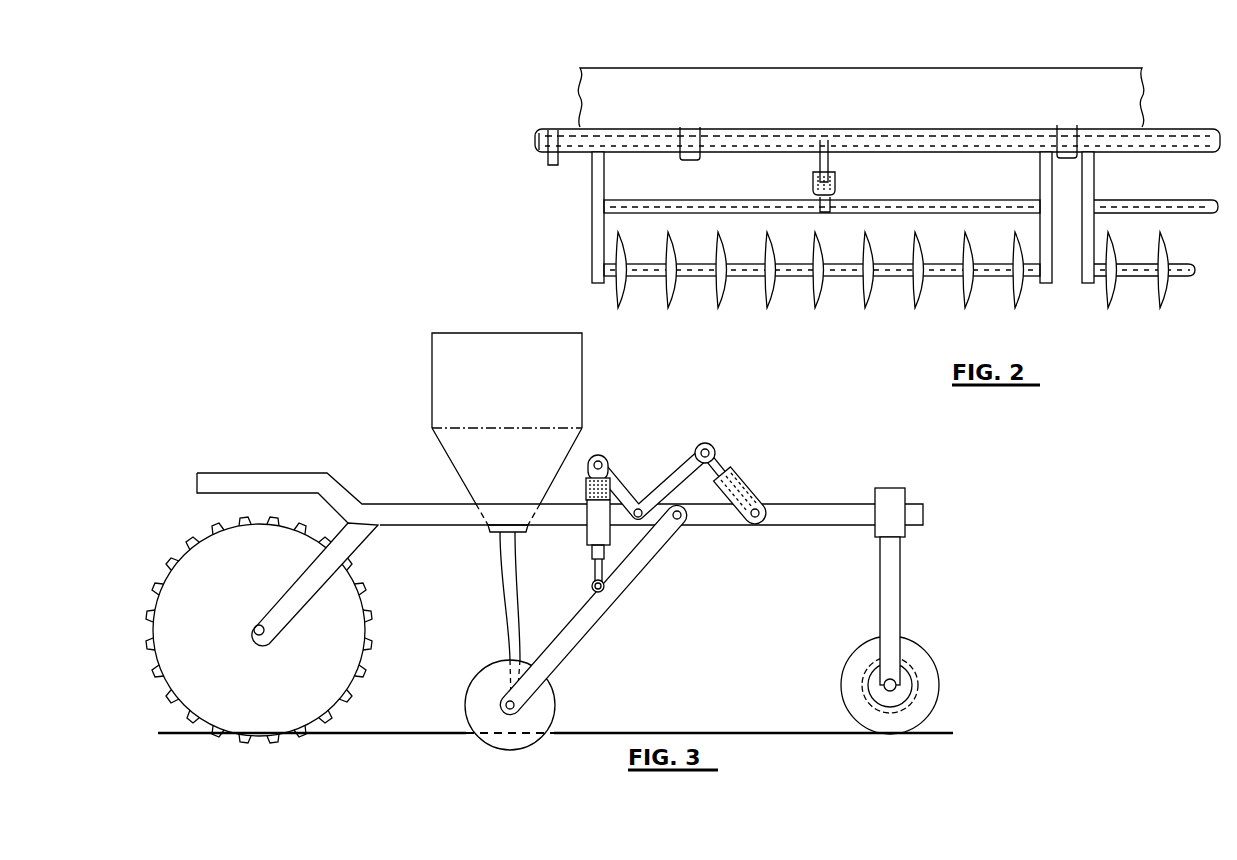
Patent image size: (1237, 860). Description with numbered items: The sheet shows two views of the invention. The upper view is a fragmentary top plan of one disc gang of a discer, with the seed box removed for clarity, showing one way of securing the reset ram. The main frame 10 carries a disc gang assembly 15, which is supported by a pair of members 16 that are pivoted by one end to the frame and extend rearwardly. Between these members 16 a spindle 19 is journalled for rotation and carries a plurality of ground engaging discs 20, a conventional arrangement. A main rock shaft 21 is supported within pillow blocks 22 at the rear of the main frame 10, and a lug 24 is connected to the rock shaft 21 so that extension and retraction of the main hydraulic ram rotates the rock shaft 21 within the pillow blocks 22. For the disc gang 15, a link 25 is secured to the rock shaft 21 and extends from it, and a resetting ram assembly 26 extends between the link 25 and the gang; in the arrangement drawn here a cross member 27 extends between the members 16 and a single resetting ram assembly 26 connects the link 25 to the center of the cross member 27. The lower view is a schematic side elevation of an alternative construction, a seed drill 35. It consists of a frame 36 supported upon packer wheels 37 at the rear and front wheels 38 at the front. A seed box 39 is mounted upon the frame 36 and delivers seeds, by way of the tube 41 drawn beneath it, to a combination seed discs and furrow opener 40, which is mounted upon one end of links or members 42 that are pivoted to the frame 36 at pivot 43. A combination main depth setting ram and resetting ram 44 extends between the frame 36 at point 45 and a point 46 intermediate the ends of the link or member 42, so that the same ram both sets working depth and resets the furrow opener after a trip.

In FIG. 2, the main frame 10 is at (578, 86).
In FIG. 2, the disc gang assembly 15 is at (899, 298).
In FIG. 2, the members 16 is at (594, 226).
In FIG. 2, the spindle 19 is at (953, 273).
In FIG. 2, the ground engaging discs 20 is at (915, 285).
In FIG. 2, the main rock shaft 21 is at (877, 155).
In FIG. 2, the pillow blocks 22 is at (690, 146).
In FIG. 2, the lug 24 is at (550, 163).
In FIG. 2, the link 25 is at (830, 158).
In FIG. 2, the resetting ram assembly 26 is at (810, 184).
In FIG. 2, the cross member 27 is at (985, 206).
In FIG. 3, the seed drill 35 is at (542, 541).
In FIG. 3, the frame 36 is at (410, 503).
In FIG. 3, the packer wheels 37 is at (350, 625).
In FIG. 3, the front wheels 38 is at (848, 684).
In FIG. 3, the seed box 39 is at (445, 364).
In FIG. 3, the combination seed discs and furrow opener 40 is at (481, 683).
In FIG. 3, the seed tube 41 is at (508, 616).
In FIG. 3, the links or members 42 is at (632, 566).
In FIG. 3, the pivot 43 is at (680, 522).
In FIG. 3, the combination main depth setting ram and resetting ram 44 is at (587, 543).
In FIG. 3, the frame attachment point 45 is at (600, 462).
In FIG. 3, the link attachment point 46 is at (591, 587).